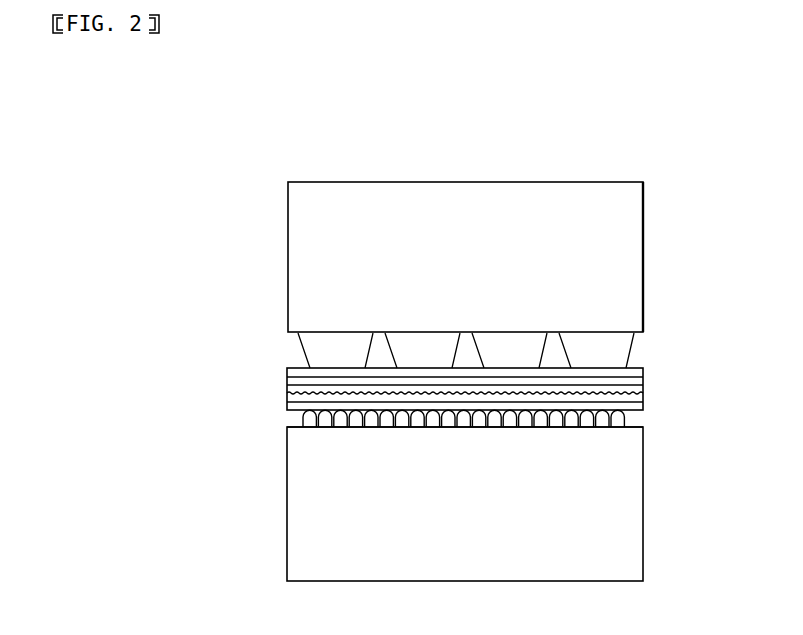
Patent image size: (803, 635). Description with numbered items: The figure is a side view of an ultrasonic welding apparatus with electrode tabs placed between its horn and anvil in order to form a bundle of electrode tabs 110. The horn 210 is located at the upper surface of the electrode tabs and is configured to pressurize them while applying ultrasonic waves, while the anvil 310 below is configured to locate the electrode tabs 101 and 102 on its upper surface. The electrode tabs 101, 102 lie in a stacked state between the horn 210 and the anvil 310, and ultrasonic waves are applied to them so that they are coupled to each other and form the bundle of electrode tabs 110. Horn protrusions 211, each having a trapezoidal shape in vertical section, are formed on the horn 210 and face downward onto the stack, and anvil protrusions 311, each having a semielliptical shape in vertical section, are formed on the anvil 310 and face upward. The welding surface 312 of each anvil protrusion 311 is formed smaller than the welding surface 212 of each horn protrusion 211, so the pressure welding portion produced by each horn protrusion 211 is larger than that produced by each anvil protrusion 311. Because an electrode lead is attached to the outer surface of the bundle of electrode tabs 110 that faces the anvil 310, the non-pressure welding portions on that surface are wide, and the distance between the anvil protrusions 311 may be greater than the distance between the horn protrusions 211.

The bundle of electrode tabs 110 is at (262, 382).
The electrode tab 101 is at (643, 370).
The electrode tab 102 is at (643, 403).
The horn 210 is at (643, 268).
The horn protrusions 211 is at (613, 358).
The welding surface 212 is at (573, 400).
The anvil 310 is at (643, 515).
The anvil protrusions 311 is at (293, 426).
The welding surface 312 is at (290, 412).